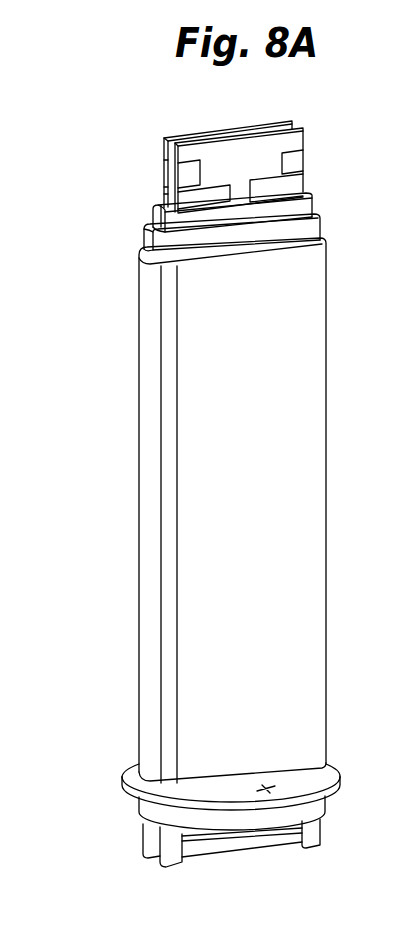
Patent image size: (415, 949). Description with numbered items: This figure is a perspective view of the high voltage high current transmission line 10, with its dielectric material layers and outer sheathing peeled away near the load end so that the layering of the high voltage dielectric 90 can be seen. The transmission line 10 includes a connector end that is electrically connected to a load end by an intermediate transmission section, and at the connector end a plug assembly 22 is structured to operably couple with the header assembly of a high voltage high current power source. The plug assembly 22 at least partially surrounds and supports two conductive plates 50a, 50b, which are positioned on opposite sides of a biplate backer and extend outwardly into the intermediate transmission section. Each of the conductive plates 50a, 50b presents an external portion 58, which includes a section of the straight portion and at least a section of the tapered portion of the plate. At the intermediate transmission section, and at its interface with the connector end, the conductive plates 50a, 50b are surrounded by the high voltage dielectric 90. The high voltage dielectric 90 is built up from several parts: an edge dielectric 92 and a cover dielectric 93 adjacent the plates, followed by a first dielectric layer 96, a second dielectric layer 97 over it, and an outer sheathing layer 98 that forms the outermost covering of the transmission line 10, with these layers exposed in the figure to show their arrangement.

The high voltage high current transmission line 10 is at (83, 75).
The plug assembly 22 is at (130, 842).
The conductive plate 50a is at (293, 132).
The conductive plate 50b is at (268, 121).
The external portion 58 is at (192, 840).
The high voltage dielectric 90 is at (110, 238).
The edge dielectric 92 is at (178, 168).
The cover dielectric 93 is at (162, 209).
The first dielectric layer 96 is at (300, 208).
The second dielectric layer 97 is at (302, 233).
The outer sheathing layer 98 is at (302, 287).